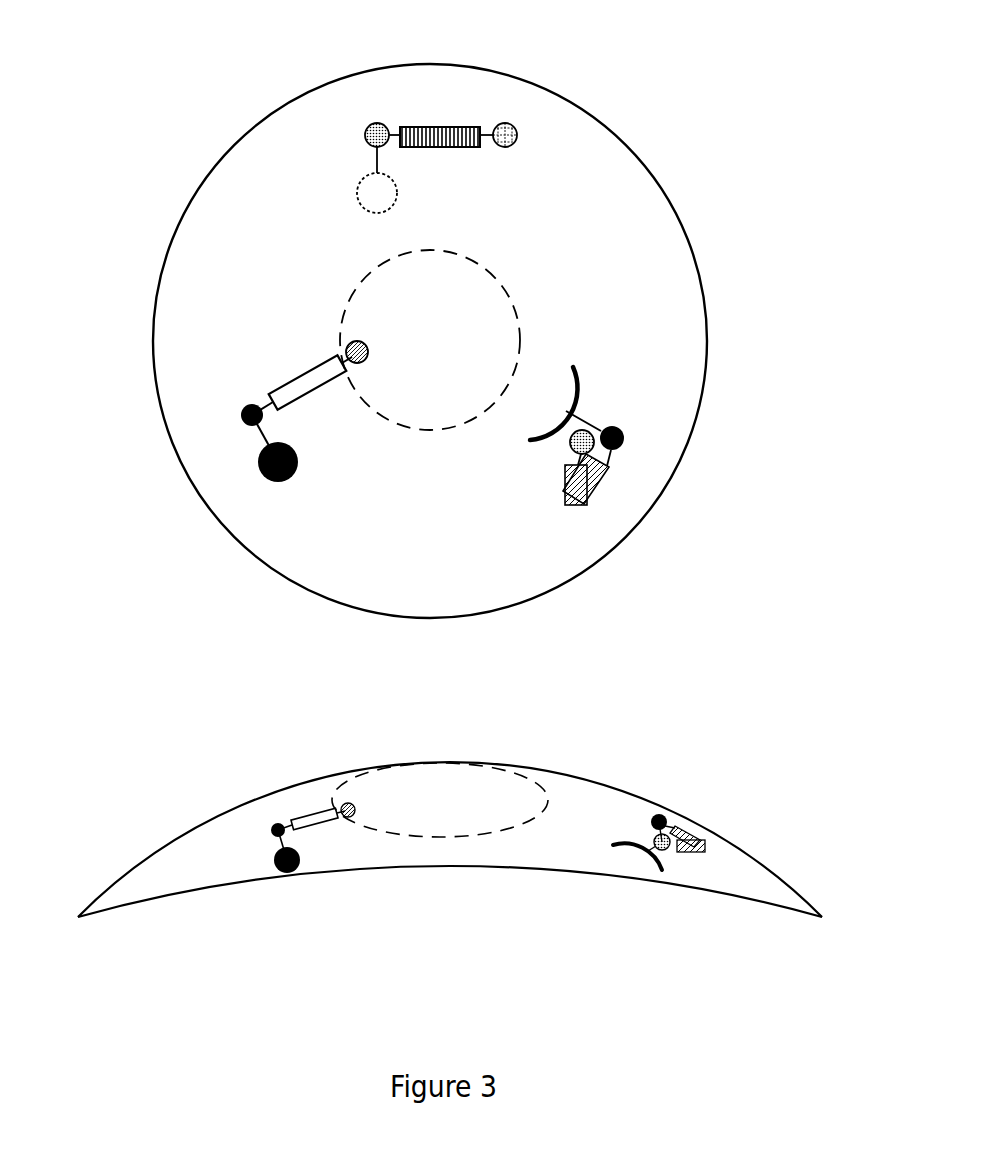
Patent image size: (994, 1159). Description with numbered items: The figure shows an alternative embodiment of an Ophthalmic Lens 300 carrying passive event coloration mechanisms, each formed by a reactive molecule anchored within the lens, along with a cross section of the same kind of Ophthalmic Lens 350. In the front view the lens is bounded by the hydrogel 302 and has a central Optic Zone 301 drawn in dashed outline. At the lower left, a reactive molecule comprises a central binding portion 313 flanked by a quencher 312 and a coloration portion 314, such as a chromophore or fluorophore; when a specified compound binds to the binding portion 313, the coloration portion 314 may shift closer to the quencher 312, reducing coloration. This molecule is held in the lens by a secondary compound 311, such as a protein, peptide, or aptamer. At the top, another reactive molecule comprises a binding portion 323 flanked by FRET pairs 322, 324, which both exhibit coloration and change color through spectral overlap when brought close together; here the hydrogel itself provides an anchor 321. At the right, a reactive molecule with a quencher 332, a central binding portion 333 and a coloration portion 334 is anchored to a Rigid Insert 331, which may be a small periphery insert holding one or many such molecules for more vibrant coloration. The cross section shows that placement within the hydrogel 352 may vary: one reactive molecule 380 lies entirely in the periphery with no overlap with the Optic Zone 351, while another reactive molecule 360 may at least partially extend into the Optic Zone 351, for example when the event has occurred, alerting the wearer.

The Ophthalmic Lens 300 is at (399, 360).
The Optic Zone 301 is at (425, 432).
The hydrogel 302 is at (305, 552).
The secondary compound 311 is at (235, 462).
The quencher 312 is at (250, 405).
The central binding portion 313 is at (293, 383).
The coloration portion 314 is at (350, 343).
The anchor 321 is at (362, 179).
The FRET pair 322 is at (377, 122).
The binding portion 323 is at (452, 127).
The FRET pair 324 is at (514, 126).
The Rigid Insert 331 is at (578, 381).
The quencher 332 is at (618, 452).
The central binding portion 333 is at (582, 512).
The coloration portion 334 is at (592, 408).
The Ophthalmic Lens 350 is at (450, 889).
The Optic Zone 351 is at (437, 840).
The hydrogel 352 is at (536, 875).
The reactive molecule 360 is at (287, 873).
The reactive molecule 380 is at (662, 872).